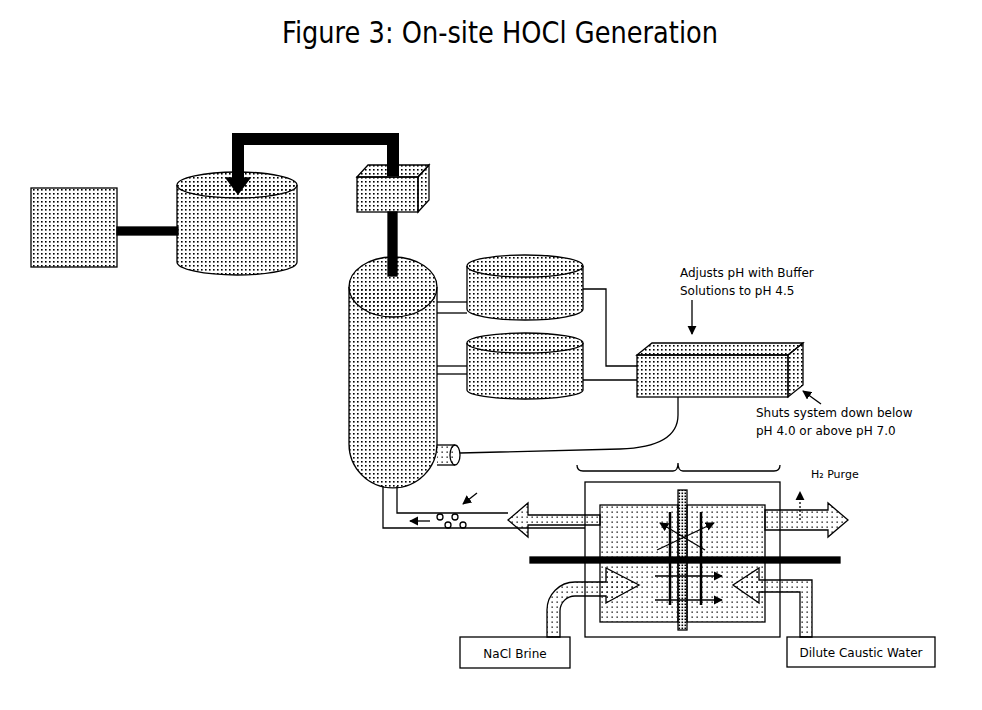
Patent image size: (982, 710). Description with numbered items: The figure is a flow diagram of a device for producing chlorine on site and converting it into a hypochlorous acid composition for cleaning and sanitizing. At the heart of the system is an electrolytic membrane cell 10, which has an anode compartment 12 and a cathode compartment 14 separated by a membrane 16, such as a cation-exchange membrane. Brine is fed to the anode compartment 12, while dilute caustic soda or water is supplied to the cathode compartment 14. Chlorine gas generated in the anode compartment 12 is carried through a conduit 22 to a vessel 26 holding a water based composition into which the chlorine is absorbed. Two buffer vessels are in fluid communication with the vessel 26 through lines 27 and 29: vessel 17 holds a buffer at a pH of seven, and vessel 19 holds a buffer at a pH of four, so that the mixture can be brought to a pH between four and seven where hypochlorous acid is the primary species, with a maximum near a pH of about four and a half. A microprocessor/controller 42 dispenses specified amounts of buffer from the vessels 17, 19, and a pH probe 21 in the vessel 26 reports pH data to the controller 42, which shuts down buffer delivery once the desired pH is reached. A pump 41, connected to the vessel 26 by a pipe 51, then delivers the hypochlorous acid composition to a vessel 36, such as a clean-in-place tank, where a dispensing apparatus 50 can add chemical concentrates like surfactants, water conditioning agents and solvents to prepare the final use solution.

The electrolytic membrane cell 10 is at (689, 564).
The anode compartment 12 is at (640, 615).
The cathode compartment 14 is at (717, 615).
The membrane 16 is at (682, 640).
The vessel 17 is at (557, 263).
The vessel 19 is at (570, 396).
The pH probe 21 is at (445, 452).
The conduit 22 is at (492, 520).
The vessel 26 is at (365, 382).
The buffer feed line 27 is at (452, 302).
The buffer feed line 29 is at (452, 366).
The vessel 36 is at (227, 257).
The pump 41 is at (407, 170).
The microprocessor/controller 42 is at (779, 352).
The dispensing apparatus 50 is at (71, 220).
The pump feed pipe 51 is at (388, 235).